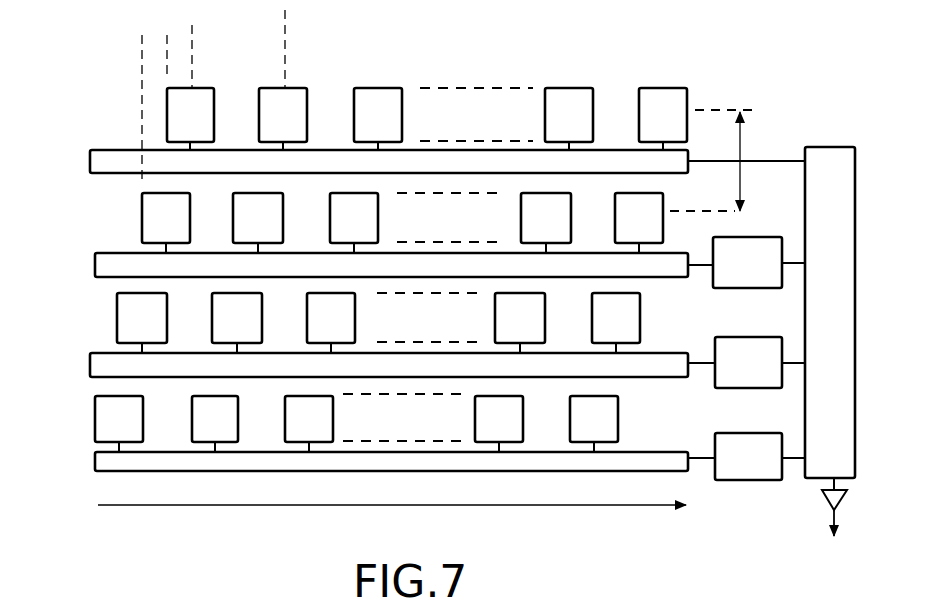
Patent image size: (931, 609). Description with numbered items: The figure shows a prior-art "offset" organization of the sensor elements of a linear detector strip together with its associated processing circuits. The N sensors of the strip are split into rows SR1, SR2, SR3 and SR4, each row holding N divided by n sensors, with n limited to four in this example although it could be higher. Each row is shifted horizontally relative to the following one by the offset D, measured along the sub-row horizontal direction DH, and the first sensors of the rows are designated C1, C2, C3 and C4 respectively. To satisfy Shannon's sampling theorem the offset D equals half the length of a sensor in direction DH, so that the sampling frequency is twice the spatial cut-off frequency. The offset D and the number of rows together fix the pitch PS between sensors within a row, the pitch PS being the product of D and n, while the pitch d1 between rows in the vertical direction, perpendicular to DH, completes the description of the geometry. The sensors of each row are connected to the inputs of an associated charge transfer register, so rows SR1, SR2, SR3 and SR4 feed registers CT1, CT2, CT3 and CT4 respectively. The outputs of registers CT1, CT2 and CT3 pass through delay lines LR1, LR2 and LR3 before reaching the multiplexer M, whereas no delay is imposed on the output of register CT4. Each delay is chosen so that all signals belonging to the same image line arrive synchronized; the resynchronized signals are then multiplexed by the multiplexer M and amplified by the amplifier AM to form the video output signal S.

The first sensor row SR1 is at (91, 422).
The second sensor row SR2 is at (109, 318).
The third sensor row SR3 is at (127, 222).
The fourth sensor row SR4 is at (127, 110).
The first sensor of row SR1 C1 is at (119, 424).
The first sensor of row SR2 C2 is at (142, 323).
The first sensor of row SR3 C3 is at (166, 223).
The first sensor of row SR4 C4 is at (190, 119).
The charge transfer register CT1 is at (95, 453).
The charge transfer register CT2 is at (90, 353).
The charge transfer register CT3 is at (95, 253).
The charge transfer register CT4 is at (90, 150).
The delay line LR1 is at (760, 456).
The delay line LR2 is at (760, 362).
The delay line LR3 is at (759, 262).
The multiplexer M is at (830, 312).
The output amplifier AM is at (824, 499).
The video output signal S is at (833, 540).
The offset D is at (178, 33).
The pitch PS is at (284, 33).
The pitch between rows d1 is at (721, 160).
The sub-row horizontal direction DH is at (392, 521).